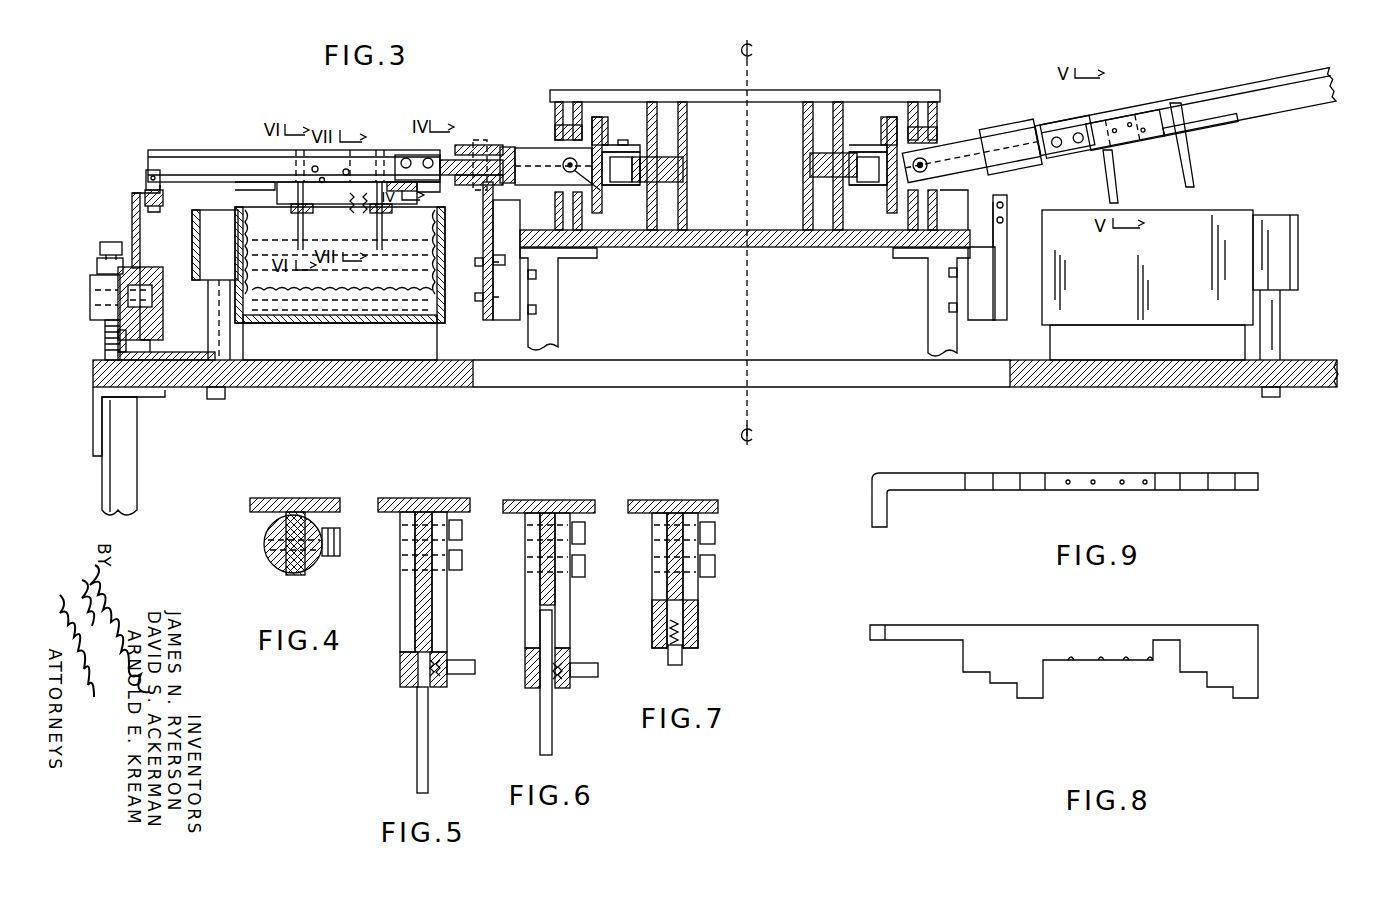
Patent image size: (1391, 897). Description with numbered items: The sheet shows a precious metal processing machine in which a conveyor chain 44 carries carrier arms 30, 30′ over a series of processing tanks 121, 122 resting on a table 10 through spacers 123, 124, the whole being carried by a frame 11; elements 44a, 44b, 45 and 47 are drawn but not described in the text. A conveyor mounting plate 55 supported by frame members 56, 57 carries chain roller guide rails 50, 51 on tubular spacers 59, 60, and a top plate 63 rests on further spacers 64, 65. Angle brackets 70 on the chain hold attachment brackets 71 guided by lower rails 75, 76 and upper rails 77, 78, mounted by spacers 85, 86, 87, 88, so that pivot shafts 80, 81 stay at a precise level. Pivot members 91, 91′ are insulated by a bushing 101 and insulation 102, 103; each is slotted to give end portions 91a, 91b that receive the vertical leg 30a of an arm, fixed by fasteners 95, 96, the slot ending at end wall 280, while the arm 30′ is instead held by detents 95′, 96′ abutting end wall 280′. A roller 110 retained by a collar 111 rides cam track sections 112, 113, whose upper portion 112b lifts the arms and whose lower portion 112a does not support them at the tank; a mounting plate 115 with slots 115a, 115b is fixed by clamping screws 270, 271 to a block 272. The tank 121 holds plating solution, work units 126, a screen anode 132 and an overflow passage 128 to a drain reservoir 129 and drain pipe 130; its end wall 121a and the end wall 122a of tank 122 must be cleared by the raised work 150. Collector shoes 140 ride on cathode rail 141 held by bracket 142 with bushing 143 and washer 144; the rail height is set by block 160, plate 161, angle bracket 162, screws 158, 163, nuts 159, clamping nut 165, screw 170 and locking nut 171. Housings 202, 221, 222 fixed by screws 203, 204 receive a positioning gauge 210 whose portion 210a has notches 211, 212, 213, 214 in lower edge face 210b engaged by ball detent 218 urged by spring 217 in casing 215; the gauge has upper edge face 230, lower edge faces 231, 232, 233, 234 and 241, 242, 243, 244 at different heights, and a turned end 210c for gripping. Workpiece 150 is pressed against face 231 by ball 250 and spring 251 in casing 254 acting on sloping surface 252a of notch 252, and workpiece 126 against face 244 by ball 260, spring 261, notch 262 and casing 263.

In FIG. 3, the table 10 is at (1190, 370).
In FIG. 3, the frame 11 is at (138, 472).
In FIG. 3, the carrier arm 30 is at (172, 150).
In FIG. 4, the carrier arm 30 is at (280, 500).
In FIG. 6, the carrier arm 30 is at (548, 502).
In FIG. 7, the carrier arm 30 is at (680, 502).
In FIG. 3, the carrier arm 30′ is at (1205, 84).
In FIG. 5, the carrier arm 30′ is at (430, 500).
In FIG. 3, the vertical leg portion 30a is at (1300, 90).
In FIG. 4, the vertical leg portion 30a is at (297, 577).
In FIG. 5, the vertical leg portion 30a is at (420, 546).
In FIG. 6, the vertical leg portion 30a is at (545, 546).
In FIG. 7, the vertical leg portion 30a is at (670, 546).
In FIG. 3, the chain 44 is at (655, 235).
In FIG. 3, the frame plate 44a is at (650, 148).
In FIG. 3, the frame plate 44b is at (836, 148).
In FIG. 3, the set screw 45 is at (625, 140).
In FIG. 3, the piston 47 is at (619, 190).
In FIG. 3, the chain roller guide rail 50 is at (688, 174).
In FIG. 3, the chain roller guide rail 51 is at (802, 174).
In FIG. 3, the conveyor mounting plate 55 is at (678, 248).
In FIG. 3, the frame member 56 is at (545, 336).
In FIG. 3, the frame member 57 is at (935, 330).
In FIG. 3, the spacer 59 is at (688, 210).
In FIG. 3, the spacer 60 is at (802, 210).
In FIG. 3, the top plate 63 is at (775, 90).
In FIG. 3, the spacer 64 is at (688, 128).
In FIG. 3, the spacer 65 is at (802, 128).
In FIG. 3, the angle bracket 70 is at (596, 125).
In FIG. 3, the carrier arm attachment bracket 71 is at (605, 130).
In FIG. 3, the lower attachment rail 75 is at (553, 205).
In FIG. 3, the lower attachment rail 76 is at (940, 200).
In FIG. 3, the upper attachment guide rail 77 is at (557, 110).
In FIG. 3, the upper attachment guide rail 78 is at (920, 100).
In FIG. 3, the pivot shaft 80 is at (563, 168).
In FIG. 3, the pivot shaft 81 is at (967, 155).
In FIG. 3, the spacer 85 is at (562, 240).
In FIG. 3, the spacer 86 is at (885, 248).
In FIG. 3, the spacer 87 is at (570, 128).
In FIG. 3, the spacer 88 is at (935, 112).
In FIG. 3, the pivot member 91 is at (502, 155).
In FIG. 3, the pivot member 91′ is at (950, 140).
In FIG. 3, the end portion 91a is at (1050, 130).
In FIG. 4, the end portion 91a is at (265, 562).
In FIG. 4, the end portion 91b is at (315, 570).
In FIG. 3, the fastening means 95 is at (348, 170).
In FIG. 3, the detent means 95′ is at (1078, 150).
In FIG. 3, the fastening means 96 is at (406, 158).
In FIG. 4, the fastening means 96 is at (340, 540).
In FIG. 3, the detent means 96′ is at (1043, 168).
In FIG. 3, the bushing 101 is at (610, 248).
In FIG. 3, the insulation 102 is at (528, 143).
In FIG. 3, the insulation 103 is at (960, 196).
In FIG. 3, the roller 110 is at (432, 192).
In FIG. 3, the collar 111 is at (430, 158).
In FIG. 3, the cam track section 112 is at (494, 190).
In FIG. 3, the lower level portion 112a is at (484, 236).
In FIG. 3, the upper portion 112b is at (480, 138).
In FIG. 3, the cam track section 113 is at (1005, 215).
In FIG. 3, the mounting plate 115 is at (482, 300).
In FIG. 3, the vertically elongated slot 115a is at (495, 250).
In FIG. 3, the vertically elongated slot 115b is at (520, 305).
In FIG. 3, the processing tank 121 is at (290, 326).
In FIG. 3, the leading end wall 121a is at (250, 205).
In FIG. 3, the processing tank 122 is at (1255, 263).
In FIG. 3, the end wall 122a is at (1172, 300).
In FIG. 3, the spacer 123 is at (320, 347).
In FIG. 3, the spacer 124 is at (1102, 347).
In FIG. 3, the work unit 126 is at (250, 246).
In FIG. 6, the work unit 126 is at (552, 739).
In FIG. 3, the overflow passage 128 is at (238, 233).
In FIG. 3, the drain reservoir 129 is at (205, 281).
In FIG. 3, the drain pipe 130 is at (212, 400).
In FIG. 3, the screen anode 132 is at (350, 297).
In FIG. 3, the collector shoe 140 is at (150, 176).
In FIG. 3, the carrier guide rail 141 is at (146, 186).
In FIG. 3, the bracket 142 is at (132, 213).
In FIG. 3, the bushing 143 is at (168, 195).
In FIG. 3, the washer 144 is at (175, 195).
In FIG. 3, the work 150 is at (1125, 202).
In FIG. 5, the work 150 is at (428, 782).
In FIG. 3, the screw 158 is at (90, 298).
In FIG. 3, the nut 159 is at (105, 350).
In FIG. 3, the block 160 is at (105, 312).
In FIG. 3, the plate 161 is at (93, 393).
In FIG. 3, the angle bracket 162 is at (180, 353).
In FIG. 3, the clamping screw 163 is at (152, 268).
In FIG. 3, the clamping nut member 165 is at (163, 300).
In FIG. 3, the screw 170 is at (100, 245).
In FIG. 3, the locking nut 171 is at (97, 265).
In FIG. 3, the housing 202 is at (295, 205).
In FIG. 7, the housing 202 is at (698, 627).
In FIG. 3, the screw 203 is at (318, 165).
In FIG. 7, the screw 203 is at (718, 533).
In FIG. 3, the screw 204 is at (312, 208).
In FIG. 7, the screw 204 is at (718, 564).
In FIG. 3, the workpiece locating plate 210 is at (437, 255).
In FIG. 5, the workpiece locating plate 210 is at (405, 600).
In FIG. 6, the workpiece locating plate 210 is at (555, 605).
In FIG. 7, the workpiece locating plate 210 is at (698, 601).
In FIG. 9, the workpiece locating plate 210 is at (1247, 472).
In FIG. 8, the workpiece locating plate 210 is at (1260, 632).
In FIG. 8, the constant cross section portion 210a is at (1063, 625).
In FIG. 8, the lower edge face 210b is at (1090, 662).
In FIG. 9, the turned end portion 210c is at (890, 522).
In FIG. 8, the turned end portion 210c is at (870, 641).
In FIG. 9, the notch 211 is at (1146, 480).
In FIG. 8, the notch 211 is at (1150, 662).
In FIG. 9, the notch 212 is at (1122, 480).
In FIG. 8, the notch 212 is at (1126, 662).
In FIG. 9, the notch 213 is at (1093, 480).
In FIG. 8, the notch 213 is at (1101, 662).
In FIG. 9, the notch 214 is at (1068, 480).
In FIG. 8, the notch 214 is at (1071, 662).
In FIG. 3, the casing 215 is at (360, 208).
In FIG. 7, the casing 215 is at (683, 657).
In FIG. 7, the compression spring 217 is at (658, 652).
In FIG. 7, the ball detent 218 is at (685, 635).
In FIG. 3, the housing 221 is at (383, 205).
In FIG. 5, the housing 221 is at (445, 622).
In FIG. 3, the housing 222 is at (298, 162).
In FIG. 6, the housing 222 is at (570, 594).
In FIG. 3, the upper edge face 230 is at (1240, 118).
In FIG. 8, the upper edge face 230 is at (900, 626).
In FIG. 3, the lower edge face 231 is at (1108, 188).
In FIG. 5, the lower edge face 231 is at (403, 663).
In FIG. 8, the lower edge face 231 is at (1260, 702).
In FIG. 8, the lower edge face 232 is at (1215, 702).
In FIG. 8, the lower edge face 233 is at (1205, 672).
In FIG. 8, the lower edge face 234 is at (1153, 641).
In FIG. 8, the lower edge face 241 is at (1030, 700).
In FIG. 8, the lower edge face 242 is at (1005, 685).
In FIG. 8, the lower edge face 243 is at (970, 674).
In FIG. 6, the lower edge face 244 is at (528, 623).
In FIG. 8, the lower edge face 244 is at (930, 646).
In FIG. 5, the ball 250 is at (435, 698).
In FIG. 5, the compression spring 251 is at (445, 682).
In FIG. 5, the notch 252 is at (418, 698).
In FIG. 5, the upper sloping surface 252a is at (410, 677).
In FIG. 5, the casing 254 is at (463, 660).
In FIG. 6, the ball 260 is at (570, 690).
In FIG. 6, the compression spring 261 is at (572, 656).
In FIG. 6, the notch 262 is at (540, 702).
In FIG. 3, the casing 263 is at (1215, 118).
In FIG. 6, the casing 263 is at (598, 672).
In FIG. 3, the clamping screw 270 is at (476, 264).
In FIG. 3, the clamping screw 271 is at (480, 302).
In FIG. 3, the fixed block 272 is at (508, 330).
In FIG. 3, the end wall 280 is at (470, 147).
In FIG. 3, the end wall 280′ is at (1035, 140).